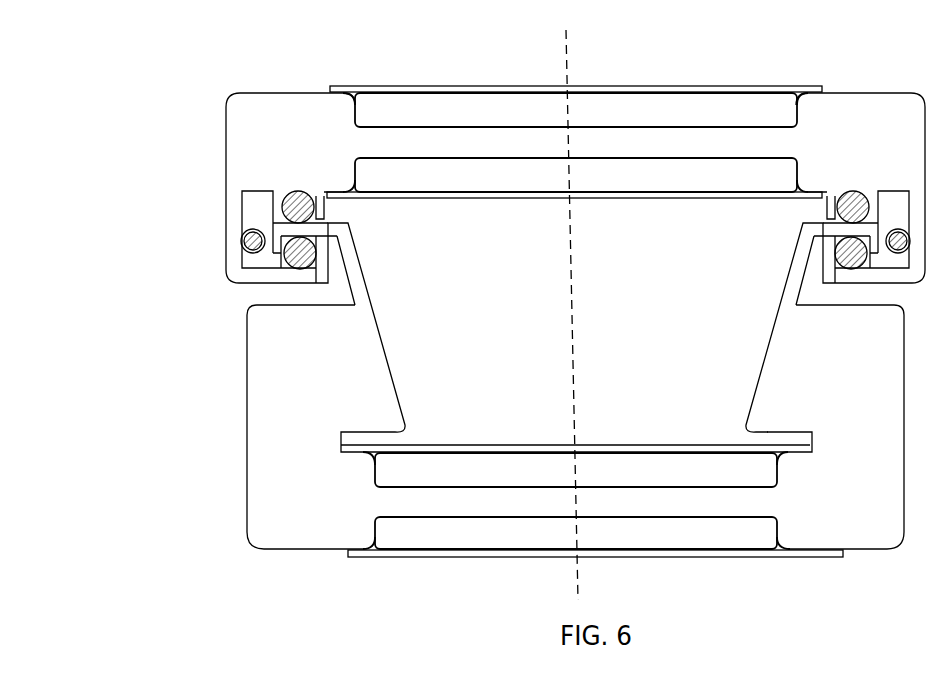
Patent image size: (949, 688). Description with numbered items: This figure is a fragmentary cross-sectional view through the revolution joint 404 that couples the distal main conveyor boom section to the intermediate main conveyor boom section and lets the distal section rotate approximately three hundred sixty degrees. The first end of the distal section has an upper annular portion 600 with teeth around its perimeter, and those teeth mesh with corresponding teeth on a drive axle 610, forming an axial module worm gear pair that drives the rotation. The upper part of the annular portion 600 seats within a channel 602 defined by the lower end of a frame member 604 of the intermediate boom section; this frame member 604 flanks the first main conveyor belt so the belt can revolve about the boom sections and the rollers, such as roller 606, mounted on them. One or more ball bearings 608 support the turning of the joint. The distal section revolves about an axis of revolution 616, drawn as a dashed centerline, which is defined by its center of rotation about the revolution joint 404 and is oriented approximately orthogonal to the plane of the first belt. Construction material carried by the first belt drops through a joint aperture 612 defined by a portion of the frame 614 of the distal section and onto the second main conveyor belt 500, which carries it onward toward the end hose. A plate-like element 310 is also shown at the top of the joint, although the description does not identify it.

The top plate 310 is at (460, 91).
The axis of revolution 616 is at (568, 73).
The frame member 604 is at (271, 190).
The roller 606 is at (365, 113).
The channel 602 is at (268, 221).
The annular portion 600 is at (245, 237).
The drive axle 610 is at (245, 245).
The revolution joint 404 is at (200, 248).
The ball bearings 608 is at (293, 261).
The frame 614 is at (263, 387).
The second main conveyor belt 500 is at (355, 450).
The joint aperture 612 is at (713, 285).